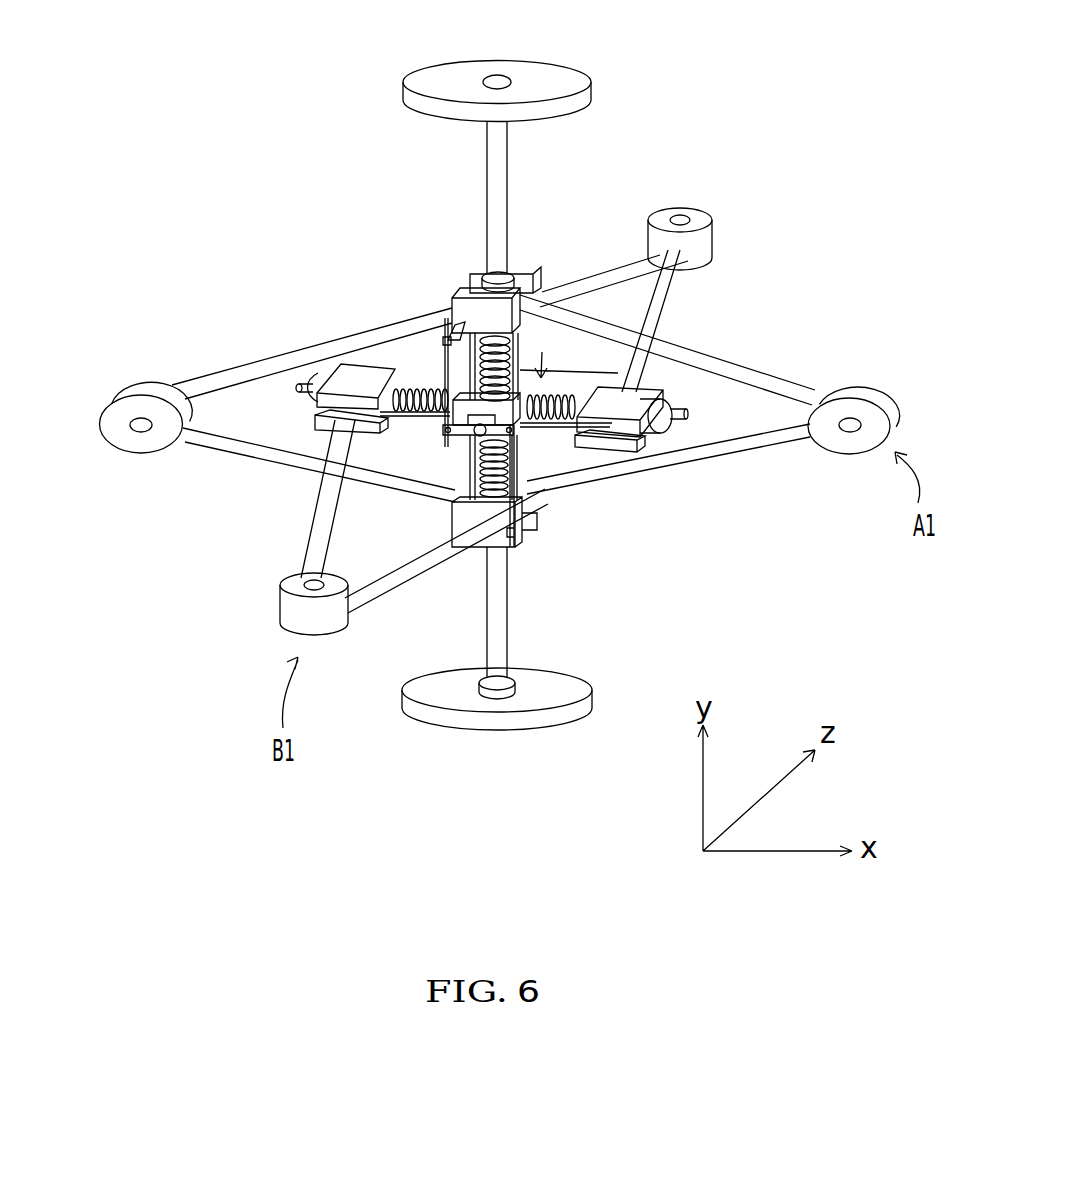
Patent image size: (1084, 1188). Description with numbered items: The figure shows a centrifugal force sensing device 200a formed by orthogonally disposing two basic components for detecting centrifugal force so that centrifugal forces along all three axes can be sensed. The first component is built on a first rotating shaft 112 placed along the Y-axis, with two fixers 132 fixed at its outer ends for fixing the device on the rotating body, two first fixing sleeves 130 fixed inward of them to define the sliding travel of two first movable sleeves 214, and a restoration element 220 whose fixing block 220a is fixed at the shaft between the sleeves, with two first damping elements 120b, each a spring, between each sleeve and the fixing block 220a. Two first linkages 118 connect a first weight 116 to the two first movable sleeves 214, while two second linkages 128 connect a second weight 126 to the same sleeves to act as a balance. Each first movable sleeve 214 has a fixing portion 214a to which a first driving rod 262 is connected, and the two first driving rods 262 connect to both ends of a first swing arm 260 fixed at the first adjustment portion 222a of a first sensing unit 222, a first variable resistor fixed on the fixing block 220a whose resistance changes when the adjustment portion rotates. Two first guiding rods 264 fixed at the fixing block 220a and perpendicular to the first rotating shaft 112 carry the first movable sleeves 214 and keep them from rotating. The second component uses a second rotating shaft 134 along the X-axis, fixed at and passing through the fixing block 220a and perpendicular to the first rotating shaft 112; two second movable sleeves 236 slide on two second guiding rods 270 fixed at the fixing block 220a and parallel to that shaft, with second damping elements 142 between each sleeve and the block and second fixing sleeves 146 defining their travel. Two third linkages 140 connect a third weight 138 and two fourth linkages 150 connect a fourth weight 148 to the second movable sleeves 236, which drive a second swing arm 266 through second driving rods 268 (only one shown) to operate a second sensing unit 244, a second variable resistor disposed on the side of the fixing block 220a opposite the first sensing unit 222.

The first rotating shaft 112 is at (498, 160).
The first weight 116 is at (864, 408).
The first linkages 118 is at (705, 360).
The first damping elements 120b is at (600, 430).
The second weight 126 is at (122, 437).
The second linkages 128 is at (278, 362).
The first fixing sleeves 130 is at (480, 270).
The fixers 132 is at (532, 75).
The second rotating shaft 134 is at (633, 405).
The third weight 138 is at (292, 618).
The third linkages 140 is at (373, 586).
The second damping elements 142 is at (390, 367).
The second fixing sleeves 146 is at (305, 380).
The fourth weight 148 is at (700, 218).
The fourth linkages 150 is at (637, 255).
The centrifugal force sensing device 200a is at (850, 950).
The first movable sleeves 214 is at (524, 273).
The fixing portion 214a is at (428, 390).
The restoration element 220 is at (645, 517).
The fixing block 220a is at (640, 432).
The first sensing unit 222 is at (430, 422).
The first adjustment portion 222a is at (446, 530).
The second movable sleeves 236 is at (312, 410).
The second sensing unit 244 is at (583, 292).
The first swing arm 260 is at (468, 432).
The first driving rods 262 is at (505, 462).
The first guiding rods 264 is at (408, 375).
The second swing arm 266 is at (530, 305).
The second driving rods 268 is at (578, 380).
The second guiding rods 270 is at (423, 388).